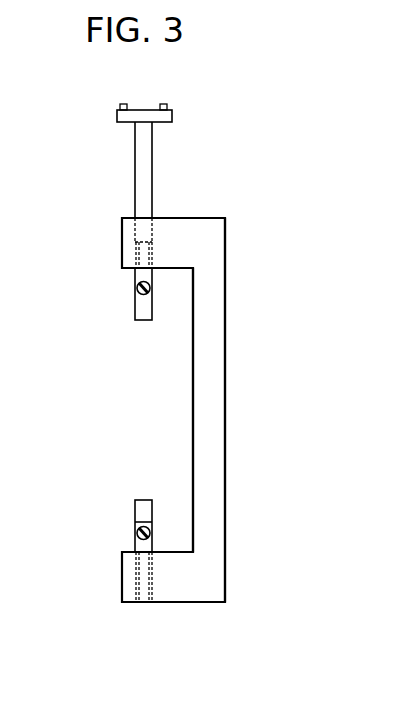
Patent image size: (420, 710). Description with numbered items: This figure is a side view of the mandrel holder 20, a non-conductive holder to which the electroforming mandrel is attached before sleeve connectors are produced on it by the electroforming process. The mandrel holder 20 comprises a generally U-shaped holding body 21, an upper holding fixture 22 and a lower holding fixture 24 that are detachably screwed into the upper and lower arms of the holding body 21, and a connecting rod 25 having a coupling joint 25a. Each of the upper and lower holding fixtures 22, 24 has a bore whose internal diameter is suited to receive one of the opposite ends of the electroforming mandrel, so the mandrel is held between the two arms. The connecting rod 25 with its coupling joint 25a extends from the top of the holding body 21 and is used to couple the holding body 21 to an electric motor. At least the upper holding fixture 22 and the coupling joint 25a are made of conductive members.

The mandrel holder 20 is at (253, 335).
The holding body 21 is at (225, 478).
The upper holding fixture 22 is at (135, 290).
The lower holding fixture 24 is at (136, 535).
The connecting rod 25 is at (135, 168).
The coupling joint 25a is at (172, 113).